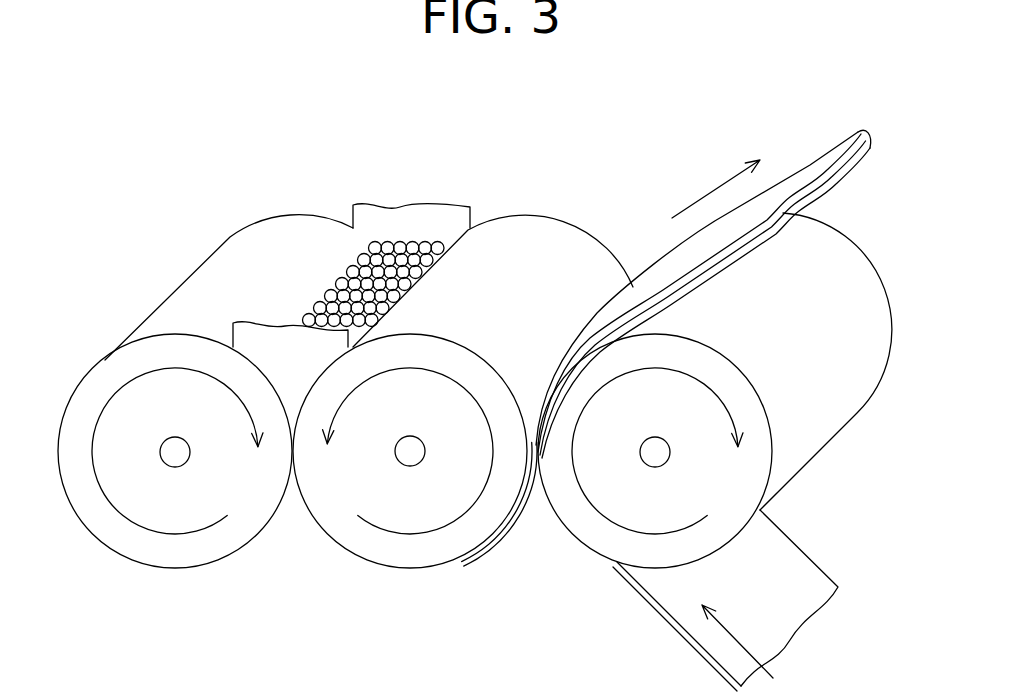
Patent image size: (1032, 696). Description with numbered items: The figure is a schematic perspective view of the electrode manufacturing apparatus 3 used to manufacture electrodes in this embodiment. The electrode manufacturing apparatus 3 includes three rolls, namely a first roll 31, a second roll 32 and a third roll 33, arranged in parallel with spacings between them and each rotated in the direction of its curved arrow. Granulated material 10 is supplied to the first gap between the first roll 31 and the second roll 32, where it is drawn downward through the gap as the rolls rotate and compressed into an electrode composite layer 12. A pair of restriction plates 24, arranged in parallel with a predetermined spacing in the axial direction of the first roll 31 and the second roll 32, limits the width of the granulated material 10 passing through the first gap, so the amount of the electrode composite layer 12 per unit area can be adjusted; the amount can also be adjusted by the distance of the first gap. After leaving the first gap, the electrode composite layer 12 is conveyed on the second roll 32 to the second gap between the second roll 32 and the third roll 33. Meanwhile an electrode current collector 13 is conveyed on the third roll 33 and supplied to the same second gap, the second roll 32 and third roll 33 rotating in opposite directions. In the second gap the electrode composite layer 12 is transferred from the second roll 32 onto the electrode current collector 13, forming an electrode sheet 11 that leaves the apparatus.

The electrode manufacturing apparatus 3 is at (172, 140).
The granulated material 10 is at (392, 257).
The electrode sheet 11 is at (800, 87).
The electrode composite layer 12 is at (803, 175).
The electrode current collector 13 is at (863, 150).
The restriction plates 24 is at (273, 347).
The first roll 31 is at (305, 228).
The second roll 32 is at (523, 227).
The third roll 33 is at (857, 267).